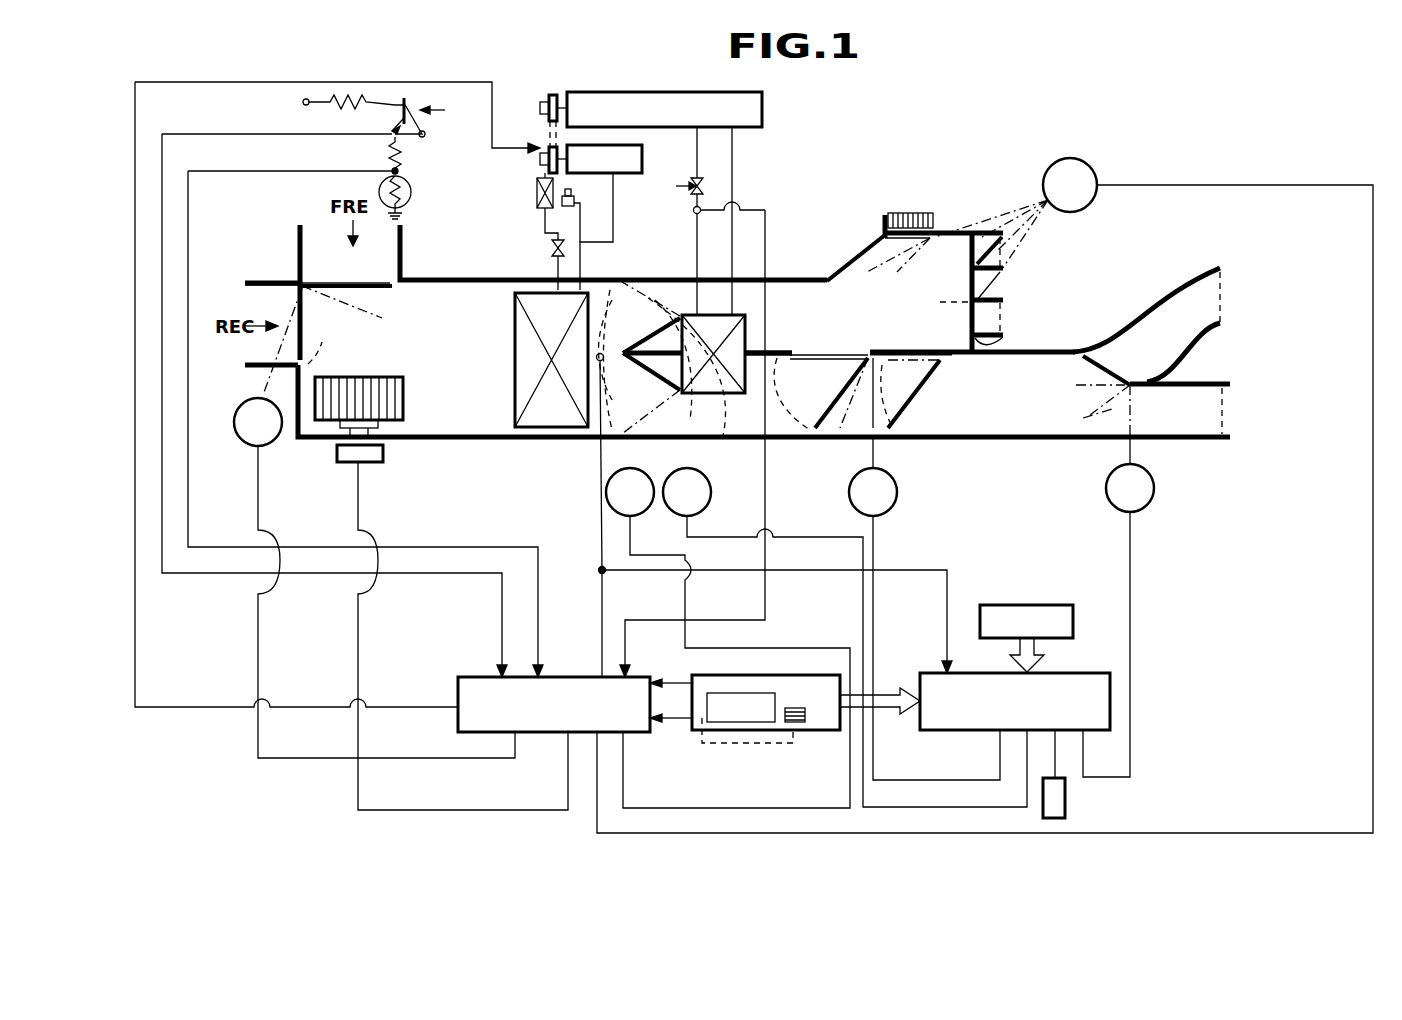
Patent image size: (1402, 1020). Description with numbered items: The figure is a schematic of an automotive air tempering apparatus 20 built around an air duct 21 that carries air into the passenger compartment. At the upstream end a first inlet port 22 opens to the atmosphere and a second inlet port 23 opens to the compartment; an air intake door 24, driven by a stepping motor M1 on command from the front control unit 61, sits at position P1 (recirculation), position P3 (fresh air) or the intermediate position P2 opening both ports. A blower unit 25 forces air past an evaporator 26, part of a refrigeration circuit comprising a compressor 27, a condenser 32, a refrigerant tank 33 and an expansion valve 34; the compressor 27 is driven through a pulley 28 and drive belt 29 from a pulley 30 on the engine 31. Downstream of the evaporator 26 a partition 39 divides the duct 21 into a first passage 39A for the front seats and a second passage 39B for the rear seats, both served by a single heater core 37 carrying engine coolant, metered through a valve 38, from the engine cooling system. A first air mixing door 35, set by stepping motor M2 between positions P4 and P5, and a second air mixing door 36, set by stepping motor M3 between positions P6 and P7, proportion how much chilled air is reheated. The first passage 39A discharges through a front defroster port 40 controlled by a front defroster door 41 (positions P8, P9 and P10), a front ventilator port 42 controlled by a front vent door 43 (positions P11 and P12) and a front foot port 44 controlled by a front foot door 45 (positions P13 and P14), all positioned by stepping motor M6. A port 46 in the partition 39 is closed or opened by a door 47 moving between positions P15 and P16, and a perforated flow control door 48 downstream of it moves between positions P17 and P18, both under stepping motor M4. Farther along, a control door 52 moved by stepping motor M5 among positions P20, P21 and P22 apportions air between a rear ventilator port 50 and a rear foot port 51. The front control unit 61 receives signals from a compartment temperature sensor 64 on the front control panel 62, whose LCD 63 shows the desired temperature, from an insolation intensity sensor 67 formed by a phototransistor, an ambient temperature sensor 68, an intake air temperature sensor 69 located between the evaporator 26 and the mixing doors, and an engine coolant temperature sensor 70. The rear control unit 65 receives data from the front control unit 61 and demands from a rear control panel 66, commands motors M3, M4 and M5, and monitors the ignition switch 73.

The air tempering apparatus 20 is at (932, 128).
The air duct 21 is at (456, 440).
The first inlet port 22 is at (356, 281).
The second inlet port 23 is at (275, 306).
The air intake door 24 is at (402, 283).
The blower unit 25 is at (375, 386).
The evaporator 26 is at (515, 340).
The compressor 27 is at (645, 160).
The pulley 28 is at (548, 168).
The drive belt 29 is at (548, 126).
The pulley 30 is at (553, 93).
The engine 31 is at (658, 91).
The condenser 32 is at (537, 195).
The refrigerant tank 33 is at (562, 204).
The expansion valve 34 is at (552, 250).
The first air mixing door 35 is at (664, 365).
The second air mixing door 36 is at (660, 410).
The heater core 37 is at (712, 405).
The water valve 38 is at (700, 182).
The partition 39 is at (780, 440).
The first passage 39A is at (782, 305).
The second passage 39B is at (962, 385).
The front defroster port 40 is at (908, 212).
The front defroster door 41 is at (883, 236).
The front ventilator port 42 is at (1006, 255).
The front vent door 43 is at (978, 232).
The front foot port 44 is at (1006, 312).
The front foot door 45 is at (1000, 345).
The port 46 is at (800, 355).
The door 47 is at (826, 355).
The flow control door 48 is at (942, 368).
The rear ventilator port 50 is at (1222, 300).
The rear foot port 51 is at (1226, 412).
The control door 52 is at (1112, 368).
The front control unit 61 is at (458, 720).
The front control panel 62 is at (692, 680).
The temperature display 63 is at (768, 695).
The compartment temperature sensor 64 is at (808, 718).
The rear control unit 65 is at (1085, 673).
The rear control panel 66 is at (1055, 604).
The insolation intensity sensor 67 is at (404, 98).
The ambient temperature sensor 68 is at (412, 186).
The intake air temperature sensor 69 is at (598, 362).
The engine coolant temperature sensor 70 is at (693, 210).
The ignition switch 73 is at (1066, 810).
The air intake door position P1 is at (394, 288).
The air intake door position P2 is at (386, 318).
The air intake door position P3 is at (308, 341).
The first air mixing door position P4 is at (608, 300).
The first air mixing door position P5 is at (660, 300).
The second air mixing door position P6 is at (601, 455).
The second air mixing door position P7 is at (640, 437).
The front defroster door position P8 is at (852, 236).
The front defroster door position P9 is at (886, 272).
The front defroster door position P10 is at (905, 272).
The front vent door position P11 is at (972, 252).
The front vent door position P12 is at (963, 289).
The front foot door position P13 is at (970, 342).
The front foot door position P14 is at (937, 306).
The door position P15 is at (805, 394).
The door position P16 is at (843, 397).
The flow control door position P17 is at (900, 424).
The flow control door position P18 is at (900, 395).
The control door position P20 is at (1090, 370).
The control door position P21 is at (1074, 386).
The control door position P22 is at (1082, 418).
The stepping motor M1 is at (258, 422).
The stepping motor M2 is at (630, 492).
The stepping motor M3 is at (687, 492).
The stepping motor M4 is at (873, 476).
The stepping motor M5 is at (1130, 474).
The stepping motor M6 is at (1070, 185).